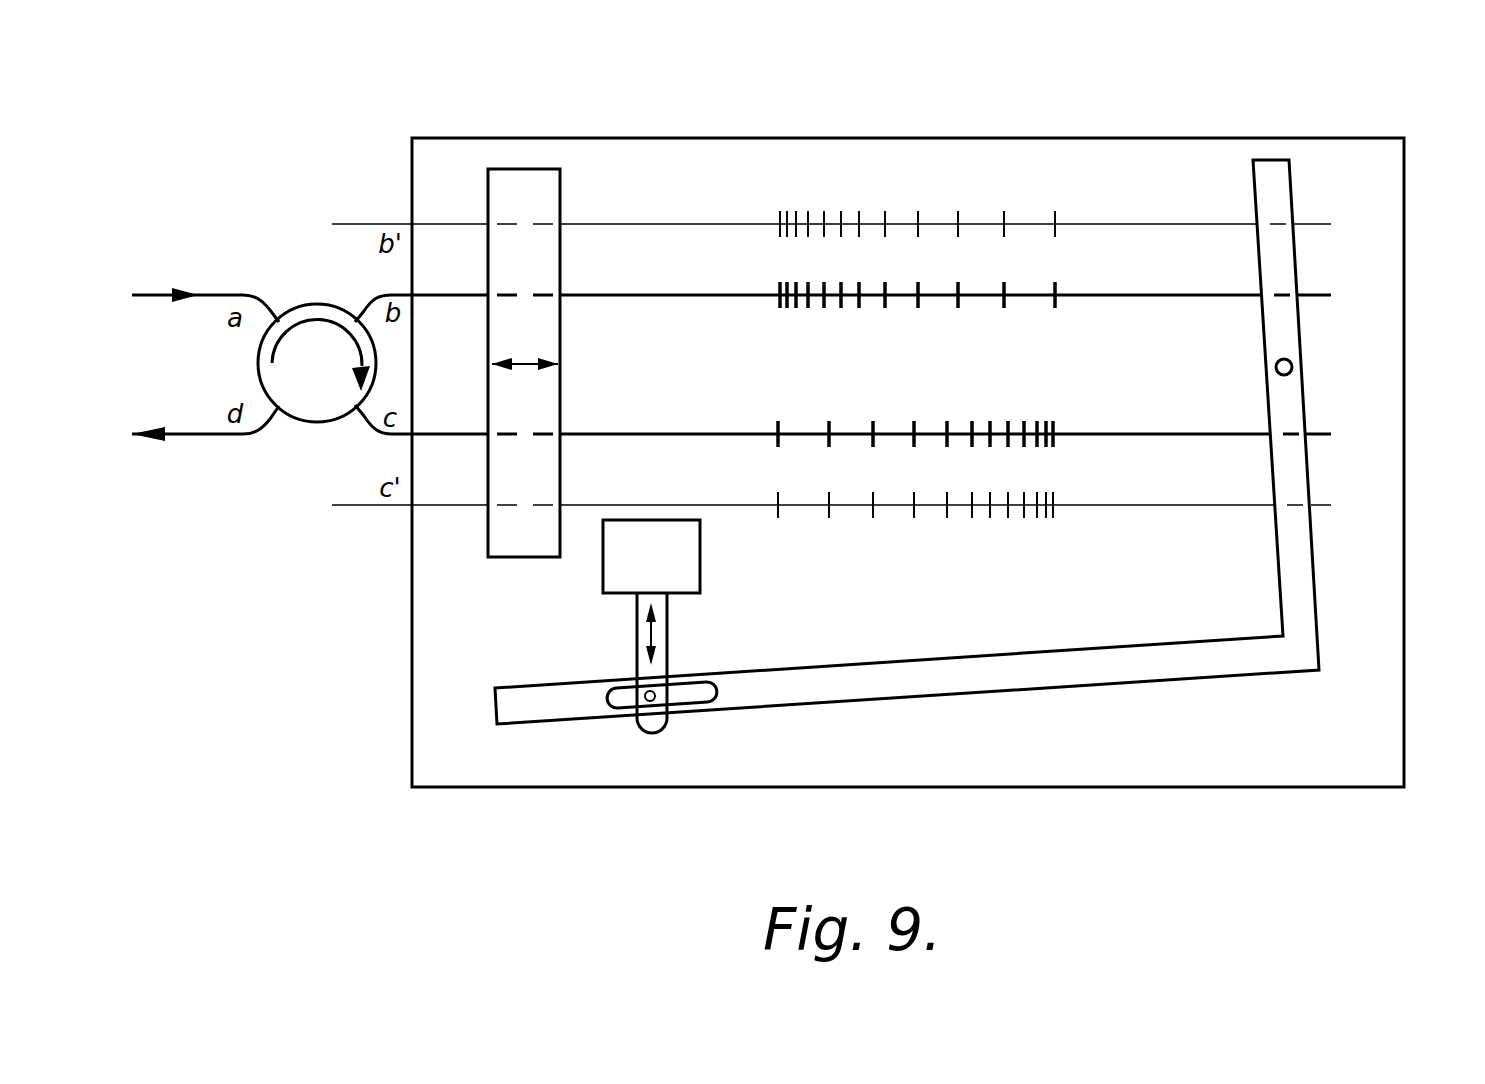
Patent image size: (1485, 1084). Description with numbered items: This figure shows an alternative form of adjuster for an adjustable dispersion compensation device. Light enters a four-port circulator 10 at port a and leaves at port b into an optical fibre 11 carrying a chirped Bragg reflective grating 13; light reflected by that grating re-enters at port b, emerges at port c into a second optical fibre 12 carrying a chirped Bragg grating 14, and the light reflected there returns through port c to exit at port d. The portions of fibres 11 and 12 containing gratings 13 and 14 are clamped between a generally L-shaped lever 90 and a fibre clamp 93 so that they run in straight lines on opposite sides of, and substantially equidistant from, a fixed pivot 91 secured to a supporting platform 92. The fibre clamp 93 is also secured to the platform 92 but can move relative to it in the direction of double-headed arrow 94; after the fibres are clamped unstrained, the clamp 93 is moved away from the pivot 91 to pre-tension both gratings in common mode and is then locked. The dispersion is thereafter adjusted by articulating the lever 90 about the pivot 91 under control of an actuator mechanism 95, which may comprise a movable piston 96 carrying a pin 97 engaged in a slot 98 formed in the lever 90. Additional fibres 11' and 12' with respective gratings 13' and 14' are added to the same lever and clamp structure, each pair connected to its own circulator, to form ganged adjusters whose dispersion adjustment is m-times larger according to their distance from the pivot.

The four-port circulator 10 is at (315, 360).
The optical fibre 11 is at (843, 282).
The additional optical fibre 11' is at (831, 196).
The optical fibre 12 is at (843, 401).
The additional optical fibre 12' is at (831, 482).
The chirped Bragg reflective grating 13 is at (954, 280).
The chirped Bragg reflective grating 13' is at (955, 205).
The chirped Bragg reflective grating 14 is at (948, 418).
The chirped Bragg reflective grating 14' is at (955, 490).
The L-shaped lever 90 is at (1200, 660).
The fixed pivot 91 is at (1300, 363).
The supporting platform 92 is at (1125, 757).
The fibre clamp 93 is at (518, 203).
The double-headed arrow 94 is at (523, 360).
The actuator mechanism 95 is at (677, 560).
The movable piston 96 is at (643, 668).
The pin 97 is at (635, 723).
The slot 98 is at (692, 697).